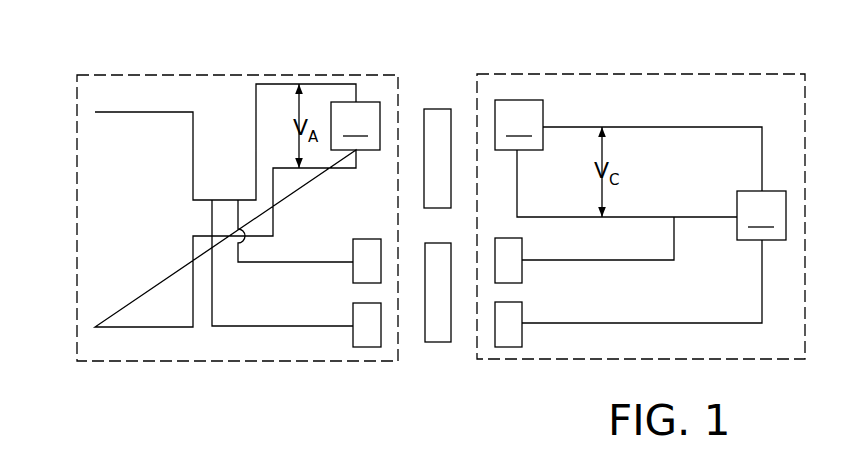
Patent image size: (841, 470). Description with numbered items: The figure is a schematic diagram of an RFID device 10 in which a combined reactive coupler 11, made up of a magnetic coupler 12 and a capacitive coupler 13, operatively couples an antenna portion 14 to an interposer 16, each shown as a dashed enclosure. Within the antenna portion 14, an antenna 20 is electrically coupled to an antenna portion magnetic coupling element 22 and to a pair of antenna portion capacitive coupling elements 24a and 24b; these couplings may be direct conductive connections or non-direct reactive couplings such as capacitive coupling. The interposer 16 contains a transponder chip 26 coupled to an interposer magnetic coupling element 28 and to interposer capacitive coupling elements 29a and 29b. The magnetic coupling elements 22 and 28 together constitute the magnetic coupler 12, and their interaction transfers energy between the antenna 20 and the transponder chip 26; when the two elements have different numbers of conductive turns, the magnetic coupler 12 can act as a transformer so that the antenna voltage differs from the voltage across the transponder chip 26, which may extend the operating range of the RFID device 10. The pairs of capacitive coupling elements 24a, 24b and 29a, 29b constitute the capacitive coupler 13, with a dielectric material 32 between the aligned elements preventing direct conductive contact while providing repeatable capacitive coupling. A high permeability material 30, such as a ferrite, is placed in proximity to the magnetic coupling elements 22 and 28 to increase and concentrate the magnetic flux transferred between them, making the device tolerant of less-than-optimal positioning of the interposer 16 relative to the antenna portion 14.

The RFID device 10 is at (131, 56).
The combined reactive coupler 11 is at (245, 49).
The magnetic coupler 12 is at (437, 57).
The capacitive coupler 13 is at (415, 371).
The antenna portion 14 is at (77, 107).
The interposer 16 is at (643, 90).
The antenna 20 is at (138, 333).
The antenna portion magnetic coupling element 22 is at (355, 126).
The antenna portion capacitive coupling element 24a is at (372, 238).
The antenna portion capacitive coupling element 24b is at (353, 303).
The transponder chip 26 is at (761, 215).
The interposer magnetic coupling element 28 is at (628, 158).
The interposer capacitive coupling element 29a is at (523, 278).
The interposer capacitive coupling element 29b is at (507, 347).
The high permeability material 30 is at (442, 109).
The dielectric material 32 is at (437, 342).